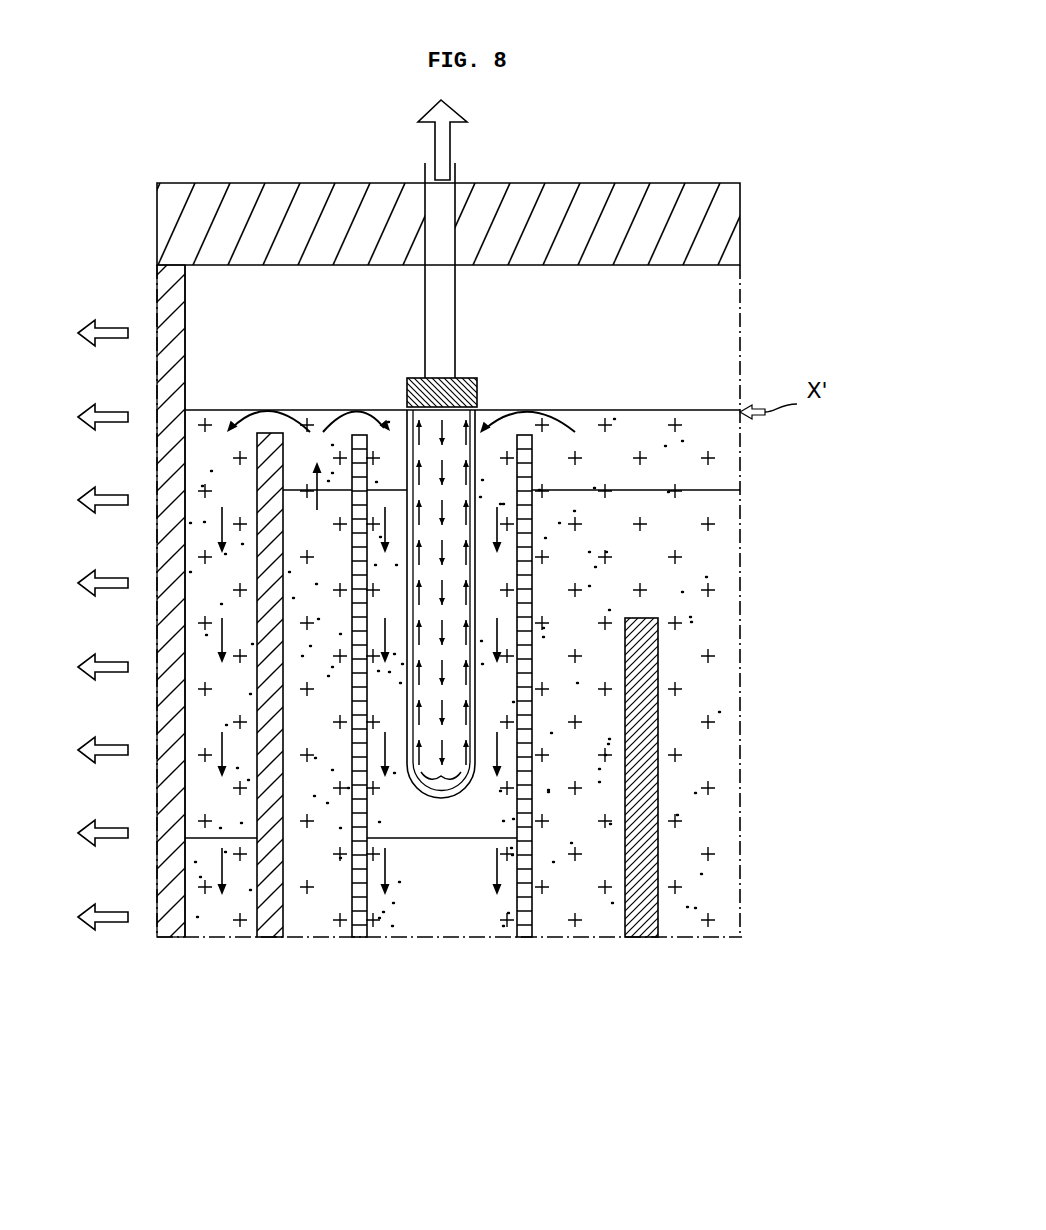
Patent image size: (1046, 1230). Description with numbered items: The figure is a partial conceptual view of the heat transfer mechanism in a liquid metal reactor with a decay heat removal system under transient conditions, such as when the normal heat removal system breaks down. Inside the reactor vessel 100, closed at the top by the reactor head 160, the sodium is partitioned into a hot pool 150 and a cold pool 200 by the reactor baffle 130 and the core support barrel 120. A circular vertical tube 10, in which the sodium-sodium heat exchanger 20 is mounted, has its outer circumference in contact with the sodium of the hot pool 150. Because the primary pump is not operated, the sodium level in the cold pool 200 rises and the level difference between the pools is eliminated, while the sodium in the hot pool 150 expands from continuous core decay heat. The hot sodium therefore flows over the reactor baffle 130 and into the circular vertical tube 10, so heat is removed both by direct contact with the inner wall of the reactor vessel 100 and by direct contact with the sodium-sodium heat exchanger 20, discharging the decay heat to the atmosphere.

The reactor vessel 100 is at (152, 297).
The reactor head 160 is at (654, 215).
The sodium-sodium heat exchanger 20 is at (487, 425).
The circular vertical tube 10 is at (528, 554).
The hot pool 150 is at (703, 711).
The core support barrel 120 is at (670, 821).
The reactor baffle 130 is at (269, 922).
The cold pool 200 is at (466, 924).